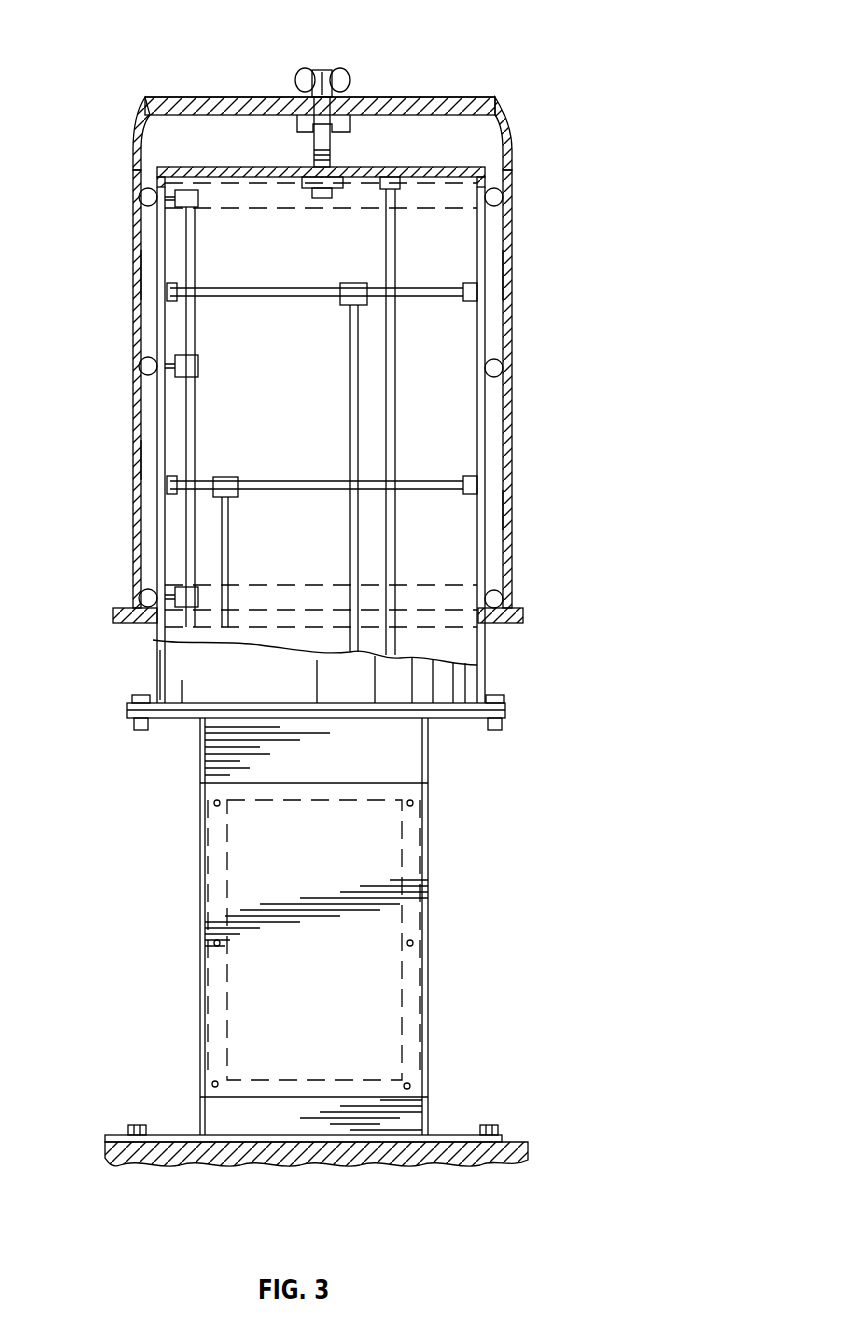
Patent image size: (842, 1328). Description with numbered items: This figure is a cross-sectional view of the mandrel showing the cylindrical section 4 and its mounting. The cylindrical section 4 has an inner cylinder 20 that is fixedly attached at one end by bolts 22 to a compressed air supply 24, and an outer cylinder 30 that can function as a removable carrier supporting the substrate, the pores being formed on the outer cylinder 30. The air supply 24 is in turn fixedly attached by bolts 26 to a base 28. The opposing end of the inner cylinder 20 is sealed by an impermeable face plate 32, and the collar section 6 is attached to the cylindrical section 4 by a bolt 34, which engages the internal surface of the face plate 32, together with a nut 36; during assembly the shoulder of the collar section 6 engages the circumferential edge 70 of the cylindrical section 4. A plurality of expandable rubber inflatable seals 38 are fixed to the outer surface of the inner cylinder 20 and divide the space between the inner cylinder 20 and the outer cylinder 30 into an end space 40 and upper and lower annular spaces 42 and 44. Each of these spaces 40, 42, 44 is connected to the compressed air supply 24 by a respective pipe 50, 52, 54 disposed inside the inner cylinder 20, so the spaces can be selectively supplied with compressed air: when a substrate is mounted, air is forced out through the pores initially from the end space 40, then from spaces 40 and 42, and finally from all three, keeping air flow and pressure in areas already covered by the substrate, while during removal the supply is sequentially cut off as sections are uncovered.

The cylindrical section 4 is at (576, 460).
The collar section 6 is at (517, 141).
The inner cylinder 20 is at (486, 262).
The bolts 22 is at (522, 700).
The compressed air supply 24 is at (345, 991).
The bolts 26 is at (138, 1124).
The base 28 is at (335, 1167).
The outer cylinder 30 is at (512, 345).
The face plate 32 is at (250, 172).
The bolt 34 is at (320, 198).
The nut 36 is at (350, 72).
The expandable rubber inflatable seals 38 is at (147, 197).
The end space 40 is at (420, 140).
The upper annular space 42 is at (150, 278).
The lower annular space 44 is at (150, 460).
The pipe 50 is at (386, 260).
The pipe 52 is at (350, 350).
The pipe 54 is at (229, 540).
The circumferential edge 70 is at (140, 158).